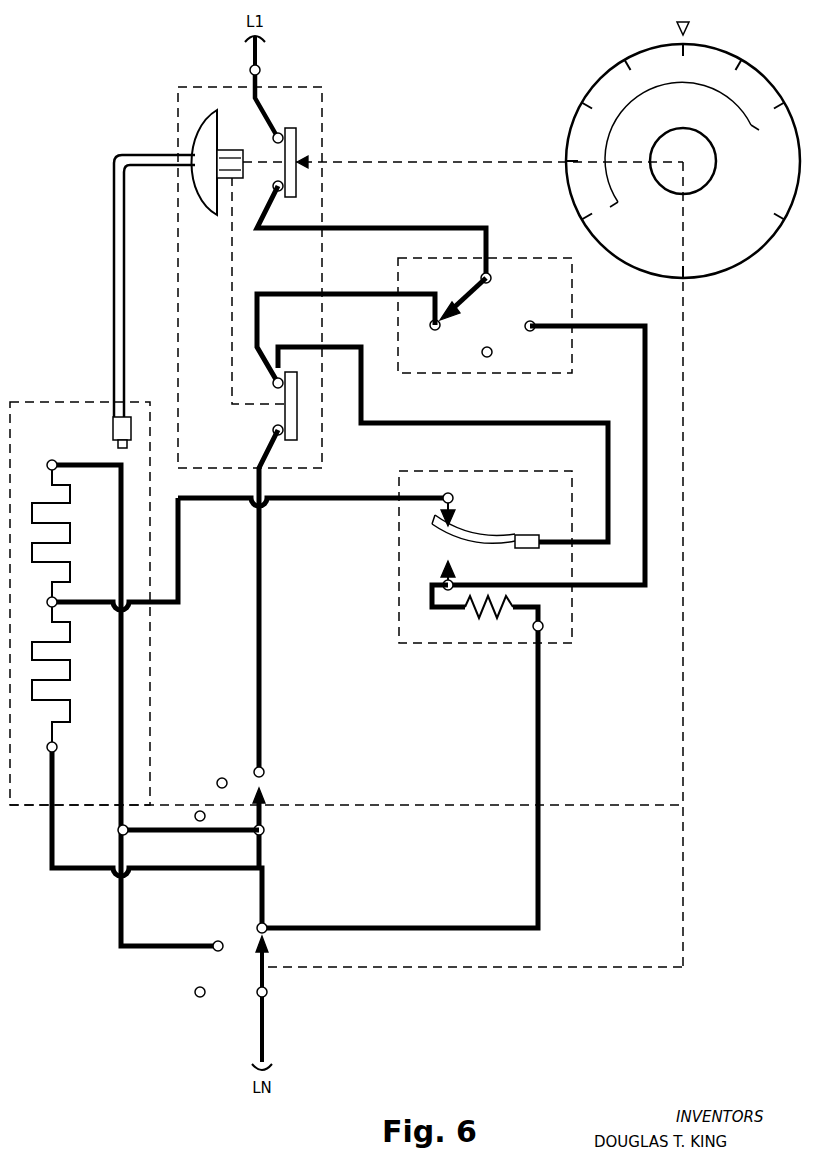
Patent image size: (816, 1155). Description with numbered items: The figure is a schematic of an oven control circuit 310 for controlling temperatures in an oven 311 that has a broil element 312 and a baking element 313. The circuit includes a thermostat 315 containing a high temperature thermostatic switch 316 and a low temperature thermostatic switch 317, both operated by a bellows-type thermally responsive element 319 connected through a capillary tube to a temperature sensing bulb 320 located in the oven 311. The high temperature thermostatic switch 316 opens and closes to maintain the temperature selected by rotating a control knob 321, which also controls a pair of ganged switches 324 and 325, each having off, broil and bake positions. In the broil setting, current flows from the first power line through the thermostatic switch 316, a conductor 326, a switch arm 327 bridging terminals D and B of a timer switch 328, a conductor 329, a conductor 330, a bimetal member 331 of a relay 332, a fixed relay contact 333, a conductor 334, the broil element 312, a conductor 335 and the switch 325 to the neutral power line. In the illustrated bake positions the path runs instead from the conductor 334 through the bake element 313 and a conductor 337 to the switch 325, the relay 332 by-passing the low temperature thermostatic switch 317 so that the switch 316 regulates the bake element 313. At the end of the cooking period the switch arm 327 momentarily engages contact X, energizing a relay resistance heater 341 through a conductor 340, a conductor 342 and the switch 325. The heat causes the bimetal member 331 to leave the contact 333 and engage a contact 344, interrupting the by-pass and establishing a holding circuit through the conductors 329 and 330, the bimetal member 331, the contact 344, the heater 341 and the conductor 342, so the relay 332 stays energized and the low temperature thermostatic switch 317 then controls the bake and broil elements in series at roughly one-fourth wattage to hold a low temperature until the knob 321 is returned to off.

The oven control circuit 310 is at (431, 97).
The oven 311 is at (37, 400).
The broil element 312 is at (72, 533).
The baking element 313 is at (72, 672).
The thermostat 315 is at (188, 86).
The high temperature thermostatic switch 316 is at (298, 138).
The low temperature thermostatic switch 317 is at (298, 432).
The thermally responsive element 319 is at (218, 138).
The temperature sensing bulb 320 is at (113, 428).
The control knob 321 is at (612, 72).
The ganged switch 324 is at (266, 803).
The ganged switch 325 is at (268, 960).
The conductor 326 is at (375, 226).
The switch arm 327 is at (472, 290).
The timer switch 328 is at (512, 256).
The conductor 329 is at (335, 292).
The conductor 330 is at (576, 420).
The bimetal member 331 is at (492, 536).
The relay 332 is at (572, 618).
The fixed relay contact 333 is at (456, 497).
The conductor 334 is at (338, 502).
The conductor 335 is at (119, 767).
The conductor 337 is at (240, 868).
The conductor 340 is at (648, 403).
The relay resistance heater 341 is at (480, 610).
The conductor 342 is at (541, 732).
The contact 344 is at (456, 580).